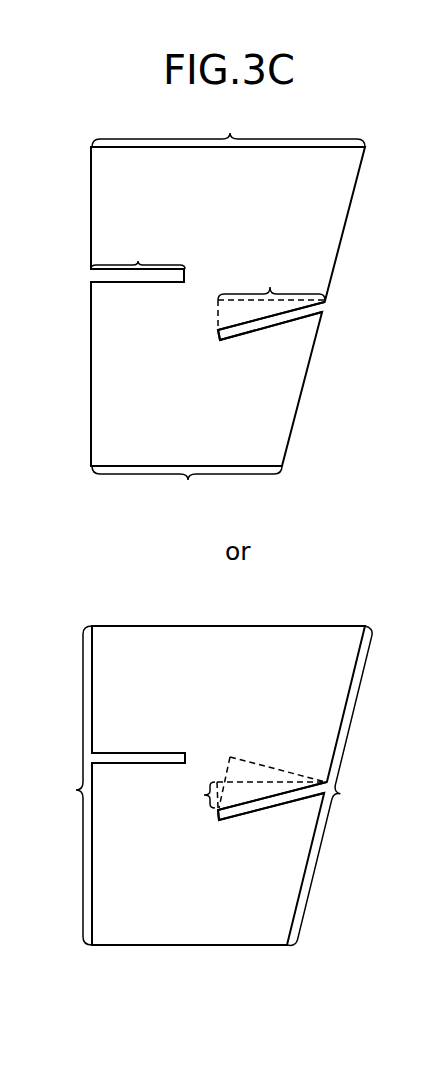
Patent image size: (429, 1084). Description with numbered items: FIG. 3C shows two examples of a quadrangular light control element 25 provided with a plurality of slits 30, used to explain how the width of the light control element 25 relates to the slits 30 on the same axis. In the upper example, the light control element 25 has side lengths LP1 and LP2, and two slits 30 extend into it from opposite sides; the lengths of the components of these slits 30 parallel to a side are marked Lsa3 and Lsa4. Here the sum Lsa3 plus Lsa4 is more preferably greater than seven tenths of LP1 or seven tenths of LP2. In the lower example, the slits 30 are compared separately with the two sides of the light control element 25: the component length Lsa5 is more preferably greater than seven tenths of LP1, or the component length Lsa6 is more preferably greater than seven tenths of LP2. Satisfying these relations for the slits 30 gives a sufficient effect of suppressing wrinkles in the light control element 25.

The light control element 25 is at (347, 222).
The slit 30 is at (138, 282).
The length of a side of the light control element LP1 is at (238, 521).
The length of a side of the light control element LP2 is at (159, 705).
The length of a slit component parallel to the side Lsa3 is at (138, 248).
The length of a slit component parallel to the side Lsa4 is at (271, 293).
The length of a slit component parallel to the side Lsa5 is at (252, 792).
The length of a slit component parallel to the side Lsa6 is at (204, 795).